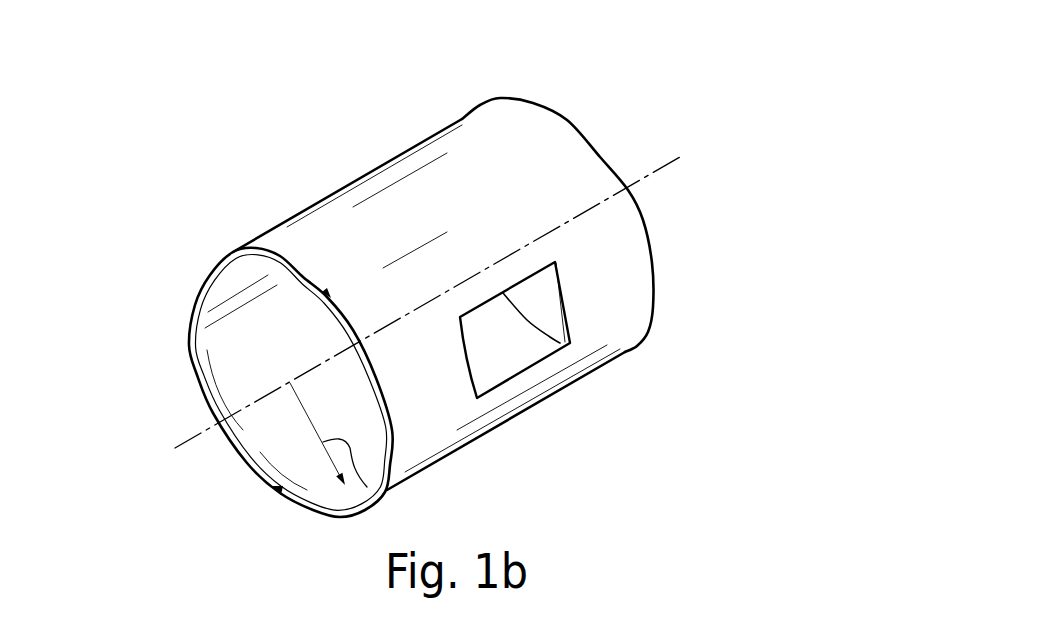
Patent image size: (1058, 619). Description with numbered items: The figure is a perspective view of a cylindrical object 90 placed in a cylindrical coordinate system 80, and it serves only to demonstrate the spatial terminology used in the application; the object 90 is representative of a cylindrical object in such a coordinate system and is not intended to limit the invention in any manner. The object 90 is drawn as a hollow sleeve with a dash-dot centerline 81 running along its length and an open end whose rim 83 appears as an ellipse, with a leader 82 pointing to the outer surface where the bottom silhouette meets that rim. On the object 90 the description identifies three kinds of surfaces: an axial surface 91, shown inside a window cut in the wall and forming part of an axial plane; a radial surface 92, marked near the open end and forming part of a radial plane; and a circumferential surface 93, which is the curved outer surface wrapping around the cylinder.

The cylindrical coordinate system 80 is at (586, 107).
The longitudinal axis 81 is at (185, 442).
The outer surface 82 is at (390, 491).
The end face / rim 83 is at (193, 280).
The cylindrical object 90 is at (451, 100).
The axial surface 91 is at (547, 347).
The radial surface 92 is at (307, 503).
The circumferential surface 93 is at (398, 200).